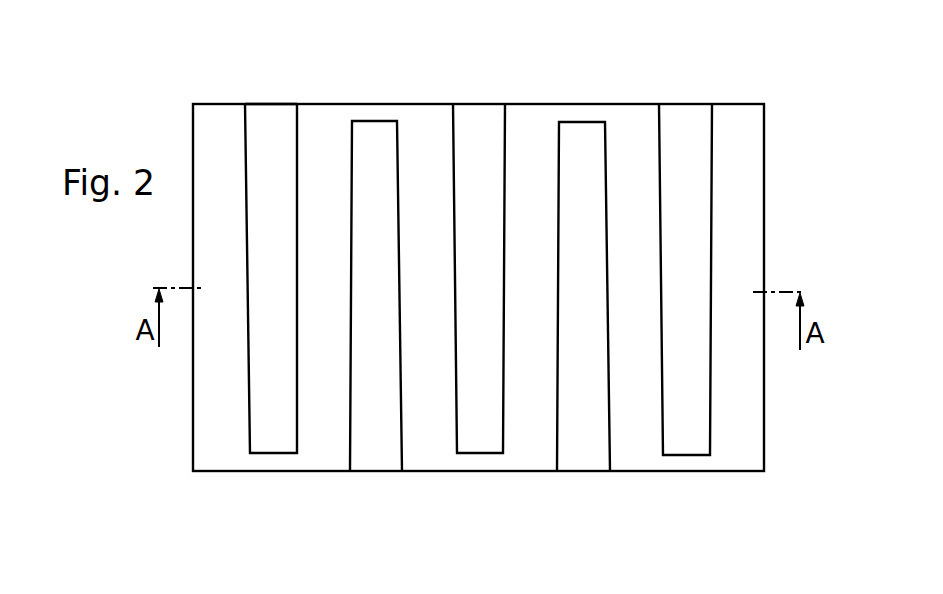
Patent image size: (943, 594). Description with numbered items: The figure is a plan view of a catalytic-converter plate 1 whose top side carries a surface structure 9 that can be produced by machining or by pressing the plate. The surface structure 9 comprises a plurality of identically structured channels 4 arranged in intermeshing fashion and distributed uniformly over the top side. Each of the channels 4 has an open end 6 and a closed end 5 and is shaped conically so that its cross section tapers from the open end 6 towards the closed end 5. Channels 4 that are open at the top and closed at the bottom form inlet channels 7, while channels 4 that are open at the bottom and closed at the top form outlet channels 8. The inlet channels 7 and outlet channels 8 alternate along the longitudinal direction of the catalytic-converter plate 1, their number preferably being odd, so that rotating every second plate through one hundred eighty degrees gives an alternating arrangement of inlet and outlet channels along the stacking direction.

The catalytic-converter plate 1 is at (459, 489).
The channels 4 is at (264, 287).
The closed end 5 is at (376, 132).
The open end 6 is at (270, 112).
The inlet channels 7 is at (677, 288).
The outlet channels 8 is at (575, 288).
The surface structure 9 is at (485, 158).